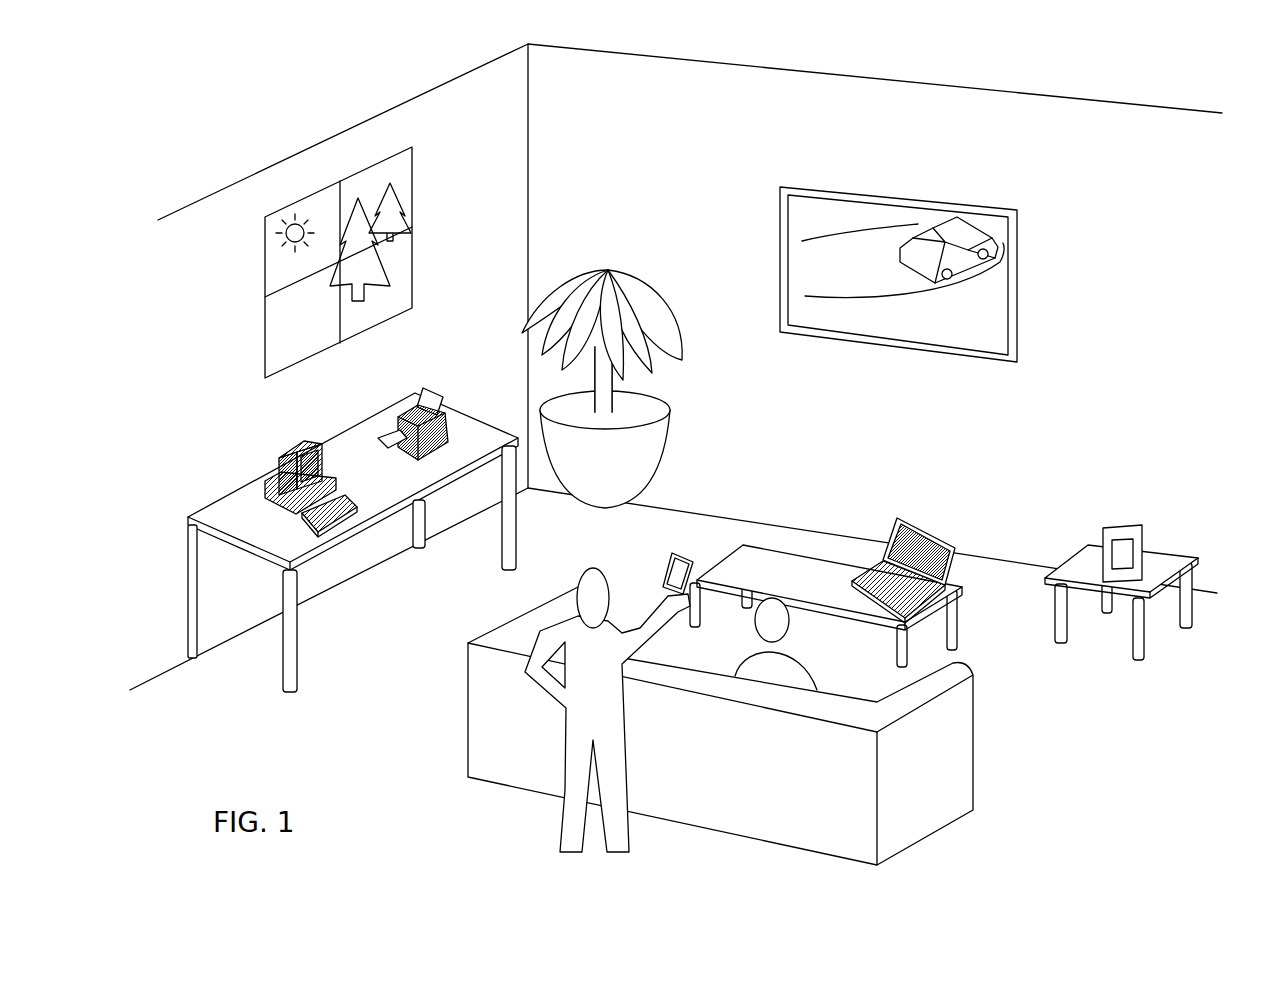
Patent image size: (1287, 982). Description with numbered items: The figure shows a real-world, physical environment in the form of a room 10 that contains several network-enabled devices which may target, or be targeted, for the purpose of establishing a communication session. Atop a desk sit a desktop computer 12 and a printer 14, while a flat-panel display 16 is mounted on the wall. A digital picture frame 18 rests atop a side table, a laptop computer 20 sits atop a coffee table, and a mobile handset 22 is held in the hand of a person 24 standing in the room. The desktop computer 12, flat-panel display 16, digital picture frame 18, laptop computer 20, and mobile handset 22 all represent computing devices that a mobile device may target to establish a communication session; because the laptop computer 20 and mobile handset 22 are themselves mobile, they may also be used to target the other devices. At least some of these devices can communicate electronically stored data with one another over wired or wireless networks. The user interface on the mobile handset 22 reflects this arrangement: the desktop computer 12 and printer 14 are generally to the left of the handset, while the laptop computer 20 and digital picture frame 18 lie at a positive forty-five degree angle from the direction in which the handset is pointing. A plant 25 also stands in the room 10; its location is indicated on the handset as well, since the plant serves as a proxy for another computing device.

The room 10 is at (240, 104).
The desktop computer 12 is at (268, 472).
The printer 14 is at (401, 407).
The flat-panel display 16 is at (1043, 233).
The digital picture frame 18 is at (1102, 528).
The laptop computer 20 is at (897, 517).
The mobile handset 22 is at (665, 573).
The person 24 is at (540, 652).
The plant 25 is at (580, 267).